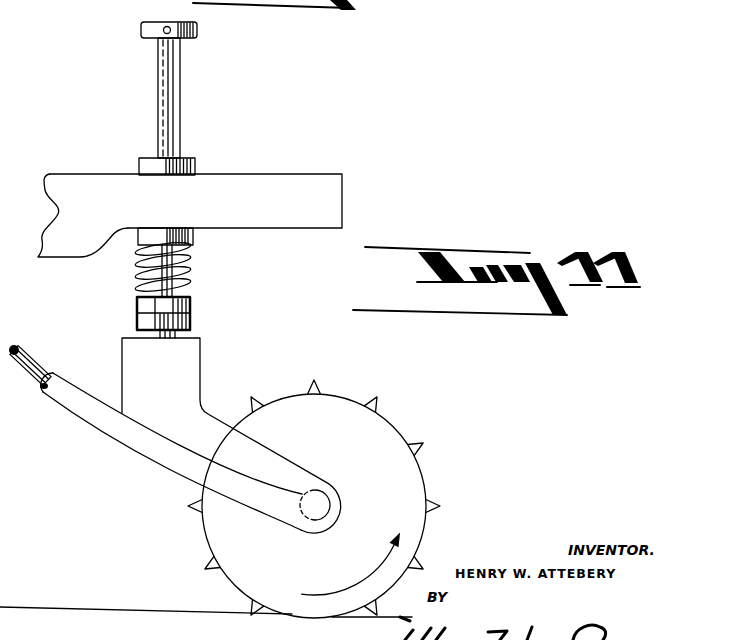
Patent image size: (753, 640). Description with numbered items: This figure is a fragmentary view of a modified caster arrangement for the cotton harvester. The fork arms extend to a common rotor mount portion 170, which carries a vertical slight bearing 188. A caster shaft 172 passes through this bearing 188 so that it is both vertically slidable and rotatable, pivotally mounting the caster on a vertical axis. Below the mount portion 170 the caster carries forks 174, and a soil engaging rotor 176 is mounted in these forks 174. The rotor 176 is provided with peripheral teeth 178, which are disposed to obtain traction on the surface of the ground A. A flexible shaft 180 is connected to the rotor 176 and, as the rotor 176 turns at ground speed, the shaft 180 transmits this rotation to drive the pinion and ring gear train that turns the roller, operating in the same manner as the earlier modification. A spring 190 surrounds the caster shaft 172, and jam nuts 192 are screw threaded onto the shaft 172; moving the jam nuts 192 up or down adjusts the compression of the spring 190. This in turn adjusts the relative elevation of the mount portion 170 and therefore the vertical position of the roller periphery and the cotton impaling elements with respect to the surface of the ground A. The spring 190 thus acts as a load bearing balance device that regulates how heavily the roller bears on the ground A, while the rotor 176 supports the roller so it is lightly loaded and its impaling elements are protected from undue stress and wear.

The rotor mount portion 170 is at (128, 198).
The caster shaft 172 is at (178, 80).
The forks 174 is at (192, 422).
The soil engaging rotor 176 is at (402, 532).
The peripheral teeth 178 is at (370, 405).
The flexible shaft 180 is at (55, 378).
The vertical slight bearing 188 is at (188, 159).
The spring 190 is at (188, 266).
The jam nuts 192 is at (188, 321).
The surface of the ground A is at (88, 607).